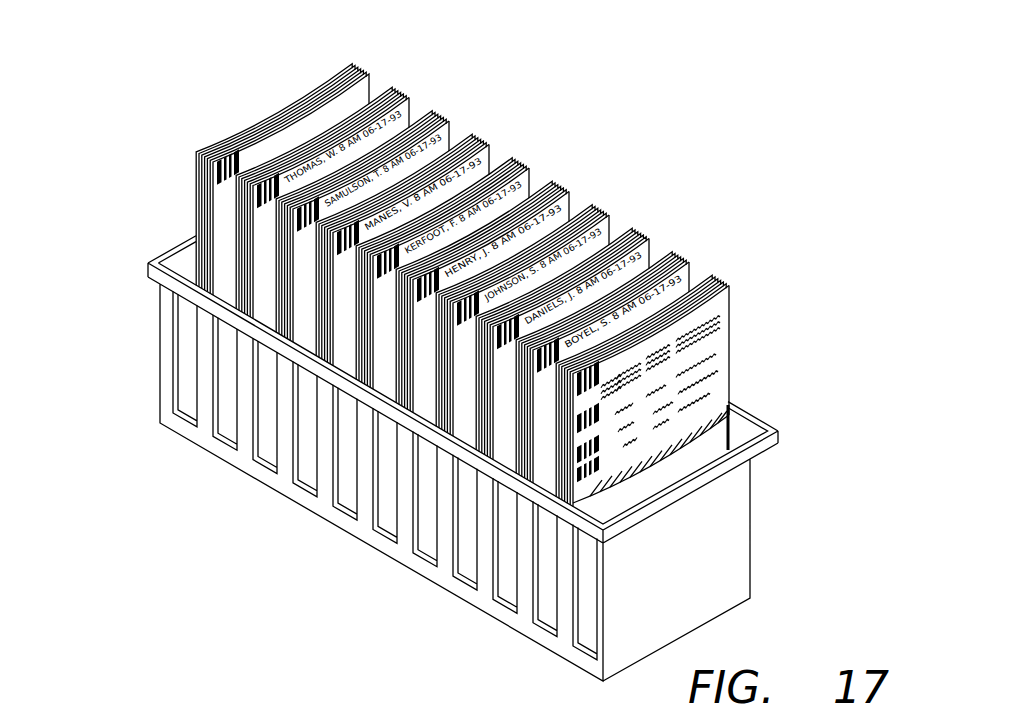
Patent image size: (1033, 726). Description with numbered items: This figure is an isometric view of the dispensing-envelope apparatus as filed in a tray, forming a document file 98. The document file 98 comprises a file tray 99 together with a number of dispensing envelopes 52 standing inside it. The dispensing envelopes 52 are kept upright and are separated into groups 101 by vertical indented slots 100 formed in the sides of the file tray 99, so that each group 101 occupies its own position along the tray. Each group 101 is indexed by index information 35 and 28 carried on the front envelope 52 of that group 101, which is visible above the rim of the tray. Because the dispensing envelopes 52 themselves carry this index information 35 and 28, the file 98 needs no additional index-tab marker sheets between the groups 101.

The document file 98 is at (487, 458).
The file tray 99 is at (700, 543).
The vertical indented slots 100 is at (415, 513).
The group 101 is at (225, 167).
The index information 28 is at (270, 167).
The index information 35 is at (262, 162).
The dispensing envelopes 52 is at (718, 374).